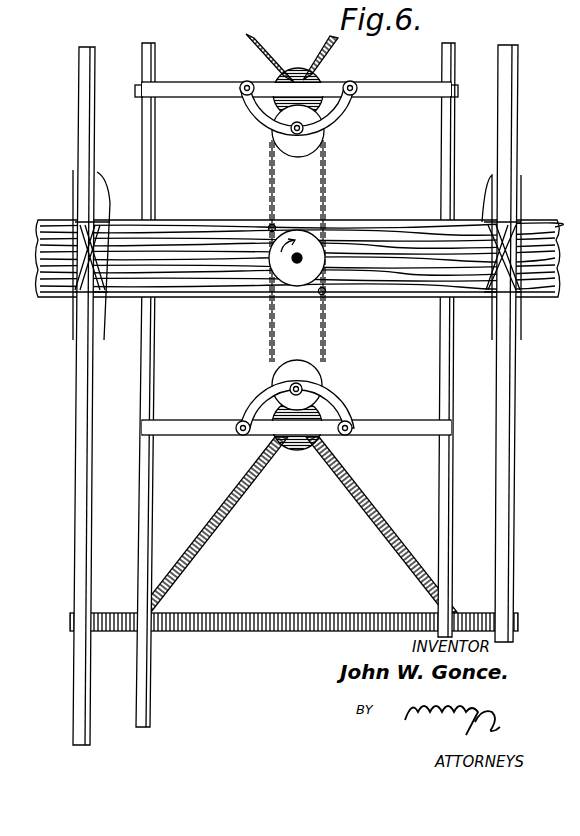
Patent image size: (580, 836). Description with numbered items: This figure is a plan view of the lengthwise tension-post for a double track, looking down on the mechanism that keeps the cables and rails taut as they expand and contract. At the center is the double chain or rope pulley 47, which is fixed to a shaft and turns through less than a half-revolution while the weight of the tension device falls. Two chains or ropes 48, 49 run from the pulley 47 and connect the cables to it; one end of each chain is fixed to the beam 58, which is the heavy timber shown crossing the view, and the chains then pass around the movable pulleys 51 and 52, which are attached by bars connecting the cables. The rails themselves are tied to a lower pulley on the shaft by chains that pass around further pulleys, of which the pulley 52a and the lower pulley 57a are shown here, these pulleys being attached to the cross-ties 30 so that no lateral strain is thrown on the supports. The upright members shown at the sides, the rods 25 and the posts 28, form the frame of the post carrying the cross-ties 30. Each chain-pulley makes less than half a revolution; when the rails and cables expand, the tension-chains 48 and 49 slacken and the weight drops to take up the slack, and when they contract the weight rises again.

The upright rods 25 is at (73, 470).
The posts of the frame 28 is at (148, 517).
The cross-ties 30 is at (330, 613).
The double chain or rope pulley 47 is at (311, 256).
The chain or rope 48 is at (337, 251).
The chain or rope 49 is at (270, 183).
The movable pulley 51 is at (312, 379).
The movable pulley 52 is at (300, 145).
The pulley 52a is at (322, 86).
The lower grooved pulley 57a is at (300, 448).
The beam 58 is at (206, 296).